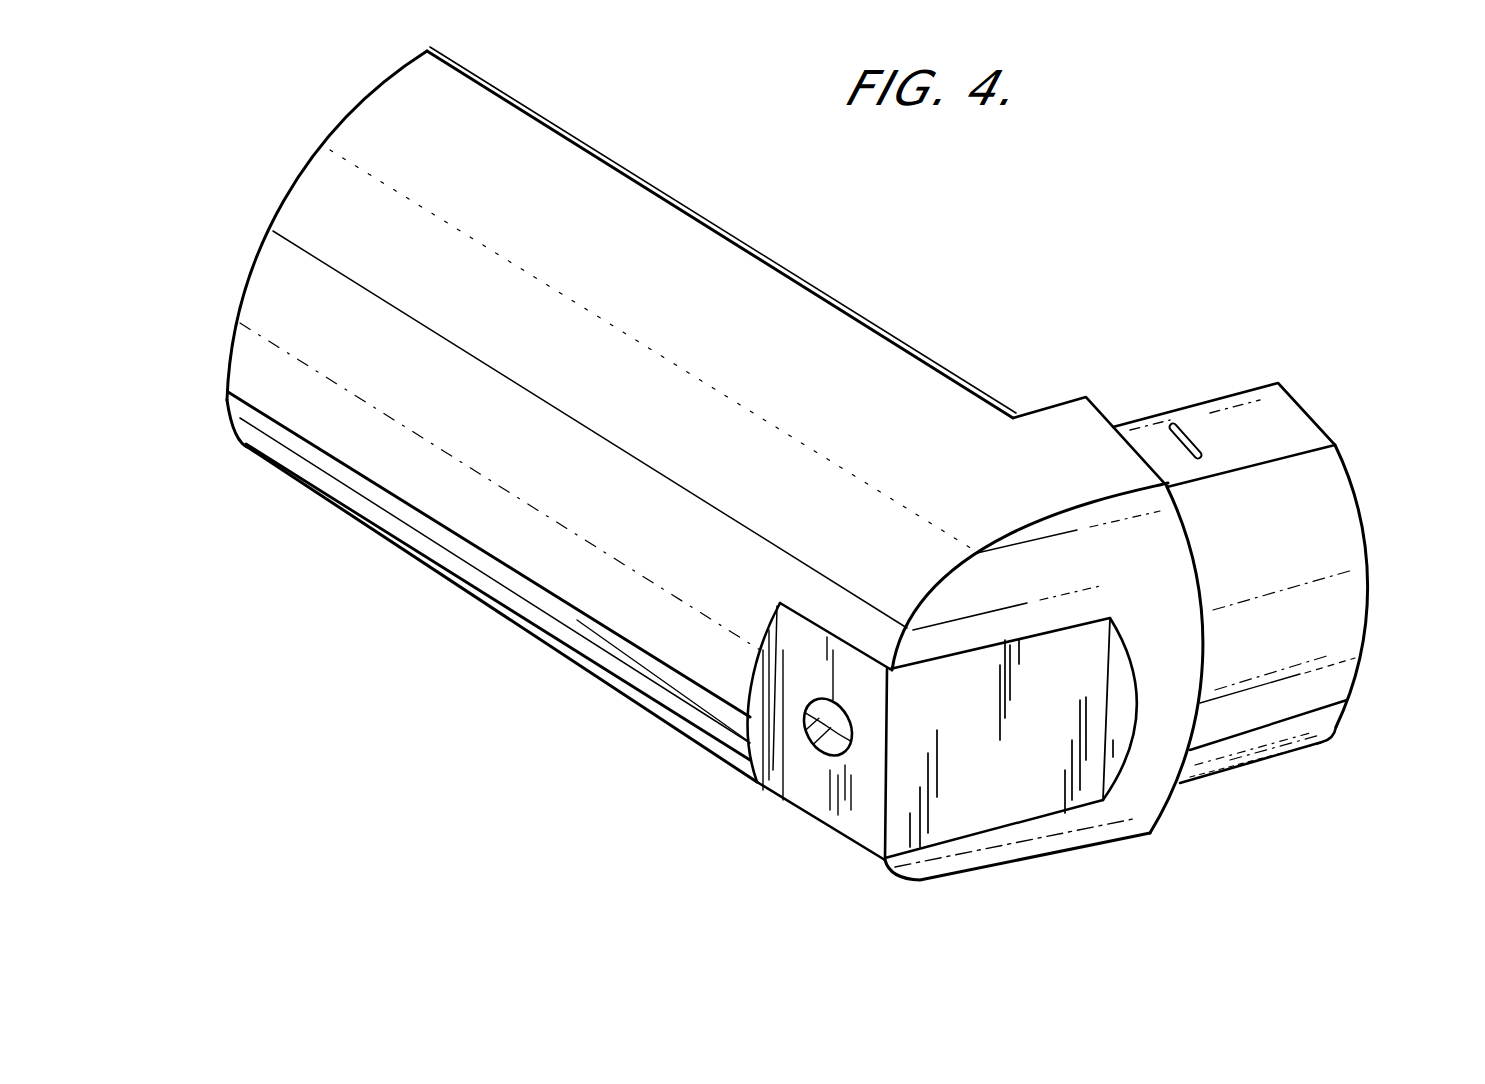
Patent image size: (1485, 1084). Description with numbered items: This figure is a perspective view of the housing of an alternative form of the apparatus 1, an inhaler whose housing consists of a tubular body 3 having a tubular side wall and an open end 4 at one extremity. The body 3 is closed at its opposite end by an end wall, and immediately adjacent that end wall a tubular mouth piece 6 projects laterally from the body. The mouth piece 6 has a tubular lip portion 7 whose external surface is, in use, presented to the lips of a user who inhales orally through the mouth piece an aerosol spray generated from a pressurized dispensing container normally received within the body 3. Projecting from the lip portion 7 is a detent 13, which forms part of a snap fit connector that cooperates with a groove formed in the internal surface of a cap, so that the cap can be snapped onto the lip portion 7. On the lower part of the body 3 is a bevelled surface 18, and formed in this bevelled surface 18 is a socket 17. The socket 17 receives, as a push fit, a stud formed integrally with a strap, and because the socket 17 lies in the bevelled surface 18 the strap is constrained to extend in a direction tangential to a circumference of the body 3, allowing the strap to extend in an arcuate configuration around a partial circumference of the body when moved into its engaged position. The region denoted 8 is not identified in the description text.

The apparatus 1 is at (805, 466).
The tubular body 3 is at (505, 607).
The open end 4 is at (293, 199).
The mouth piece 6 is at (1292, 583).
The lip portion 7 is at (1332, 693).
The connector side face 8 is at (1313, 522).
The detent 13 is at (1187, 433).
The socket 17 is at (807, 733).
The bevelled surface 18 is at (787, 744).